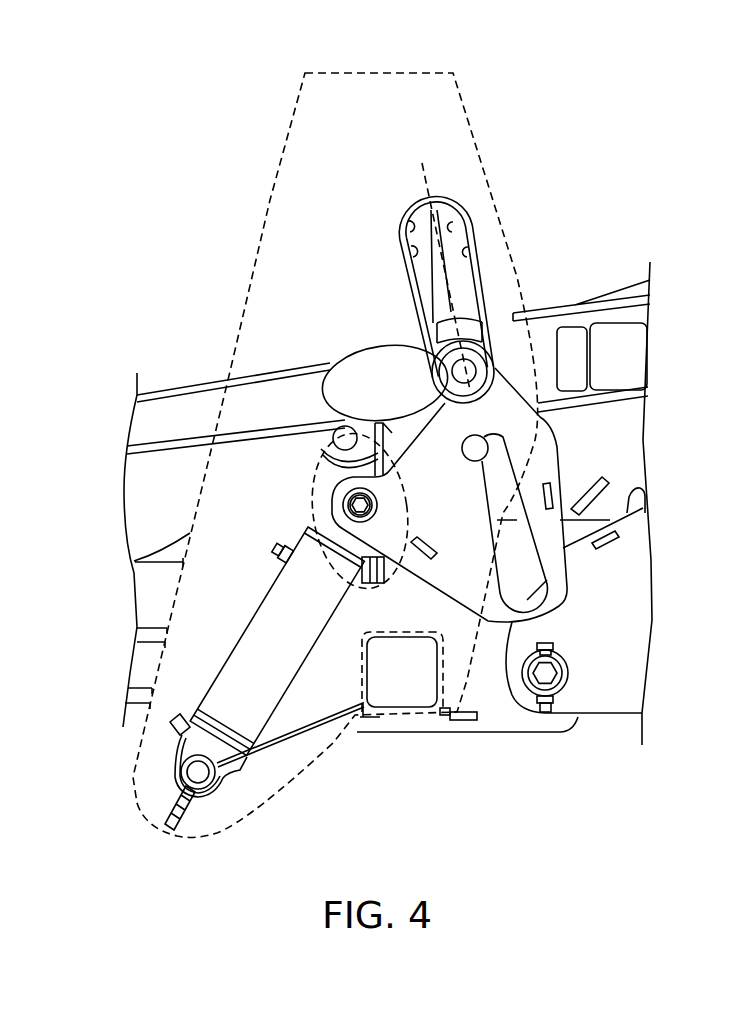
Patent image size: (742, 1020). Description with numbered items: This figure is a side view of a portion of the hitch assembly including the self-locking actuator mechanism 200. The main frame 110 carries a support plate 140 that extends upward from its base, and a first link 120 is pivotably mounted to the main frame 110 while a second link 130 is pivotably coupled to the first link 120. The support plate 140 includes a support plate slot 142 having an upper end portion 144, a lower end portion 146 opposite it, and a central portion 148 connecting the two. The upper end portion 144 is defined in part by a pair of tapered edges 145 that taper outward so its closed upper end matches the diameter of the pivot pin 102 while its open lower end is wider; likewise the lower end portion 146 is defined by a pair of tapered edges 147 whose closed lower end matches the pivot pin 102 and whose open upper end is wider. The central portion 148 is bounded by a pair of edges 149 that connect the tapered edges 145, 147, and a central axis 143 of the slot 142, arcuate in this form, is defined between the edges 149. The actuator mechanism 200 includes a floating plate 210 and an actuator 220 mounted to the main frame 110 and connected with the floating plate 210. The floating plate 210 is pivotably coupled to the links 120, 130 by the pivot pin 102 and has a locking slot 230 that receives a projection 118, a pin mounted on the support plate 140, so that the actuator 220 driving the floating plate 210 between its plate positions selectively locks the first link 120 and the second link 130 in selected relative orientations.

The pivot pin 102 is at (447, 382).
The main frame 110 is at (136, 593).
The projection 118 is at (472, 460).
The first link 120 is at (186, 388).
The second link 130 is at (640, 280).
The support plate 140 is at (291, 133).
The support plate slot 142 is at (466, 158).
The central axis 143 is at (426, 184).
The upper end portion 144 is at (459, 198).
The tapered edges 145 is at (468, 223).
The lower end portion 146 is at (494, 373).
The tapered edges 147 is at (485, 340).
The central portion 148 is at (466, 287).
The edges 149 is at (466, 240).
The actuator mechanism 200 is at (228, 511).
The floating plate 210 is at (585, 437).
The actuator 220 is at (240, 603).
The locking slot 230 is at (543, 518).